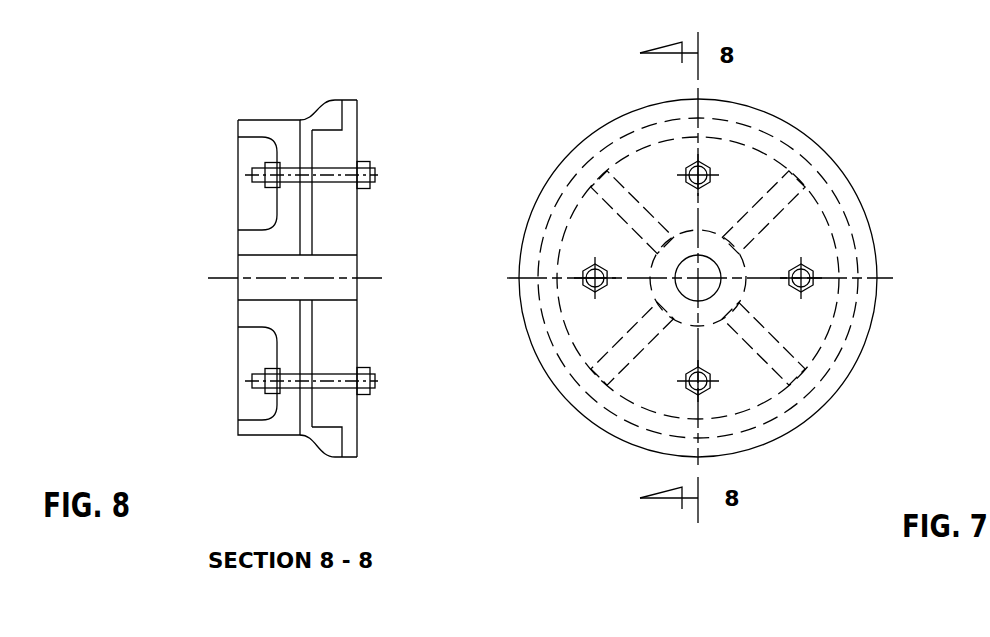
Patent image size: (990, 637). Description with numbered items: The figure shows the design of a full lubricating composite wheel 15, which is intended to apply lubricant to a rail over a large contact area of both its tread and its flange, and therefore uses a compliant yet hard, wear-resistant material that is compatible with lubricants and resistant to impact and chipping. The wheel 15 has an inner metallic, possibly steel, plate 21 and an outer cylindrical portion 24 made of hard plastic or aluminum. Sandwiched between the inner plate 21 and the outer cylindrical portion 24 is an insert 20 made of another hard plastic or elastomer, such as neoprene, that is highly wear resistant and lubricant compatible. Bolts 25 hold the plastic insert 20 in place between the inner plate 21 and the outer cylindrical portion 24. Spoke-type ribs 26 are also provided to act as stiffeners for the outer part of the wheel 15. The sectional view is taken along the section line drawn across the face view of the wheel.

In FIG. 7, the flange plate 15 is at (719, 261).
In FIG. 8, the flange plate 15 is at (292, 251).
In FIG. 8, the insert 20 is at (309, 246).
In FIG. 8, the inner metallic plate 21 is at (383, 261).
In FIG. 8, the outer cylindrical portion 24 is at (205, 278).
In FIG. 7, the bolts 25 is at (768, 278).
In FIG. 8, the bolts 25 is at (357, 259).
In FIG. 7, the spoke-type ribs 26 is at (625, 278).